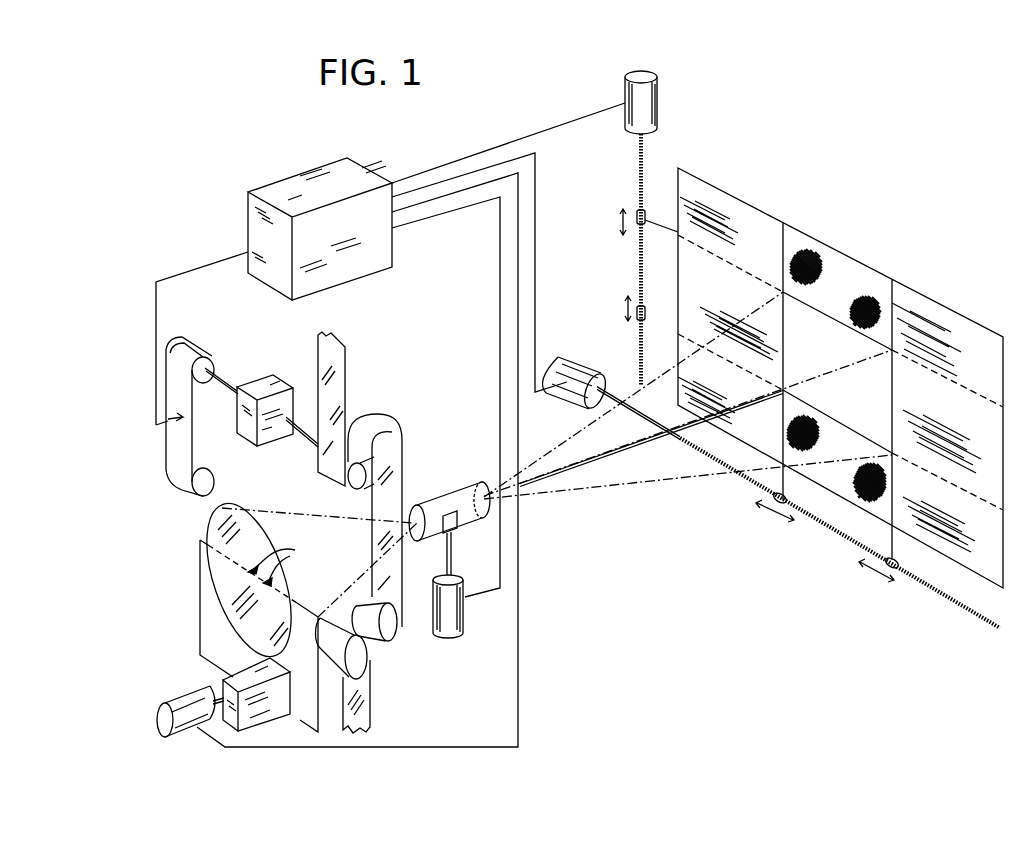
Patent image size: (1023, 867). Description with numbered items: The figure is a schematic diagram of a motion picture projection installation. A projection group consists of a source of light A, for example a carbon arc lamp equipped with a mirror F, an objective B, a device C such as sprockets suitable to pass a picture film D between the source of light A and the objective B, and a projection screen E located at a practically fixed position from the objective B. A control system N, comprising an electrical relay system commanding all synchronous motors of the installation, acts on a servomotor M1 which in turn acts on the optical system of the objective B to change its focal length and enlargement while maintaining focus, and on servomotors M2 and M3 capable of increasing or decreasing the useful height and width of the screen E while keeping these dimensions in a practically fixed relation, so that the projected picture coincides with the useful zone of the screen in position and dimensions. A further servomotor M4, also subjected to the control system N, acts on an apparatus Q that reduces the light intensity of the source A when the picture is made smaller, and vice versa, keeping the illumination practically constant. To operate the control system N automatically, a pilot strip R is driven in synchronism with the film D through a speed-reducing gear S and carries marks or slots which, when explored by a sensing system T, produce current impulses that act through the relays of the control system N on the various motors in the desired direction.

The control system N is at (388, 297).
The servomotor M2 is at (623, 90).
The projection screen E is at (766, 212).
The servomotor M3 is at (556, 356).
The sensing system T is at (175, 410).
The pilot strip R is at (176, 447).
The speed-reducing gear S is at (282, 380).
The film passing device C is at (345, 388).
The picture film D is at (397, 450).
The objective B is at (452, 495).
The mirror F is at (213, 513).
The source of light A is at (210, 536).
The light intensity reducing apparatus Q is at (233, 676).
The servomotor M4 is at (188, 699).
The servomotor M1 is at (447, 627).